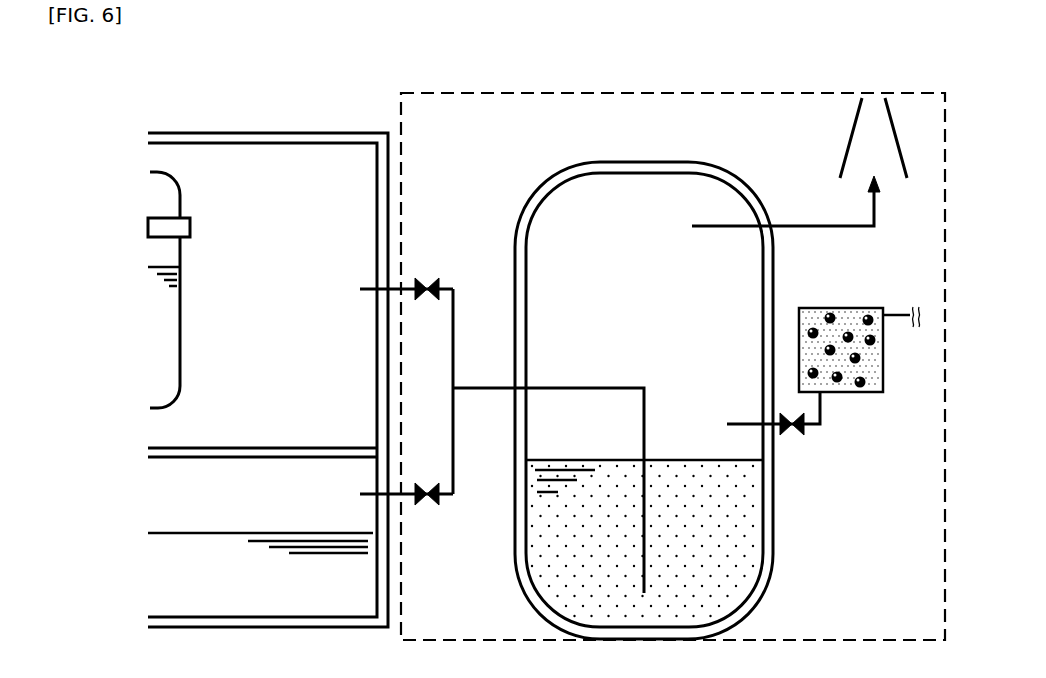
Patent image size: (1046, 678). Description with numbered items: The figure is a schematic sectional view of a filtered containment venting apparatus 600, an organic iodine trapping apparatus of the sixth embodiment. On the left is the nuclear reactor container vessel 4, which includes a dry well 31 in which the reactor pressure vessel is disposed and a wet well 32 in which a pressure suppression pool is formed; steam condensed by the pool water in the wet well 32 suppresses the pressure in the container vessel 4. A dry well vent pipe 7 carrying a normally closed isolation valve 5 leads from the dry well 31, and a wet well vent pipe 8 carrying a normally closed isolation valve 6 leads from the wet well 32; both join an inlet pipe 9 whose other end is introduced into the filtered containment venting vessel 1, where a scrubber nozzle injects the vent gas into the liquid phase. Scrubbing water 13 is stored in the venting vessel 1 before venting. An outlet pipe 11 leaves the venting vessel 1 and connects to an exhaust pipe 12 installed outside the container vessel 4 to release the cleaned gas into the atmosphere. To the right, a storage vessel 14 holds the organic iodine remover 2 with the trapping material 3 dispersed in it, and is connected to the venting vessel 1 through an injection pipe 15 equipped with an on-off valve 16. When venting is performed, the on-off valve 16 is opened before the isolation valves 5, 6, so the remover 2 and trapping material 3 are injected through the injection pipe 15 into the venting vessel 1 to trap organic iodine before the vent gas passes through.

The filtered containment venting apparatus 600 is at (690, 92).
The nuclear reactor container vessel 4 is at (331, 132).
The dry well 31 is at (355, 181).
The wet well 32 is at (355, 513).
The isolation valve 5 is at (428, 283).
The isolation valve 6 is at (428, 488).
The dry well vent pipe 7 is at (455, 336).
The wet well vent pipe 8 is at (455, 455).
The inlet pipe 9 is at (592, 385).
The filtered containment venting vessel 1 is at (646, 163).
The scrubbing water 13 is at (746, 522).
The outlet pipe 11 is at (811, 229).
The exhaust pipe 12 is at (846, 149).
The storage vessel 14 is at (884, 390).
The organic iodine remover 2 is at (875, 372).
The trapping material 3 is at (875, 342).
The injection pipe 15 is at (822, 414).
The on-off valve 16 is at (789, 437).